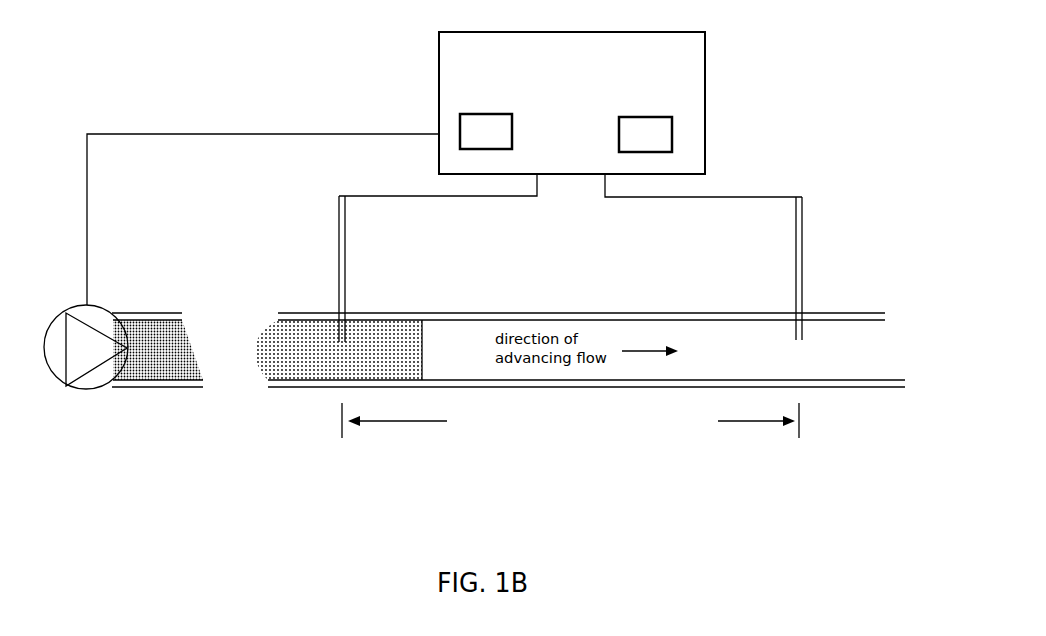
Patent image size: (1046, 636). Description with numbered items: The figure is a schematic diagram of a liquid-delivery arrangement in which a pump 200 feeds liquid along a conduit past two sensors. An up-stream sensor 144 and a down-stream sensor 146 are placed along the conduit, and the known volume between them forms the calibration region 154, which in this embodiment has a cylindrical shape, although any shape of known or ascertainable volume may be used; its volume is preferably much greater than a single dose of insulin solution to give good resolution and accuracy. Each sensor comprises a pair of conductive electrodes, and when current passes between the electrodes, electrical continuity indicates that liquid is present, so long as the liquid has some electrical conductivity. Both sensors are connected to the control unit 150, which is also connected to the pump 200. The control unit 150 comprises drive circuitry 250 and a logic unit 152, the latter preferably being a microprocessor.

The control unit 150 is at (572, 103).
The drive circuitry 250 is at (442, 103).
The logic unit 152 is at (696, 105).
The pump 200 is at (128, 395).
The up-stream sensor 144 is at (396, 258).
The down-stream sensor 146 is at (703, 257).
The calibration region 154 is at (570, 420).